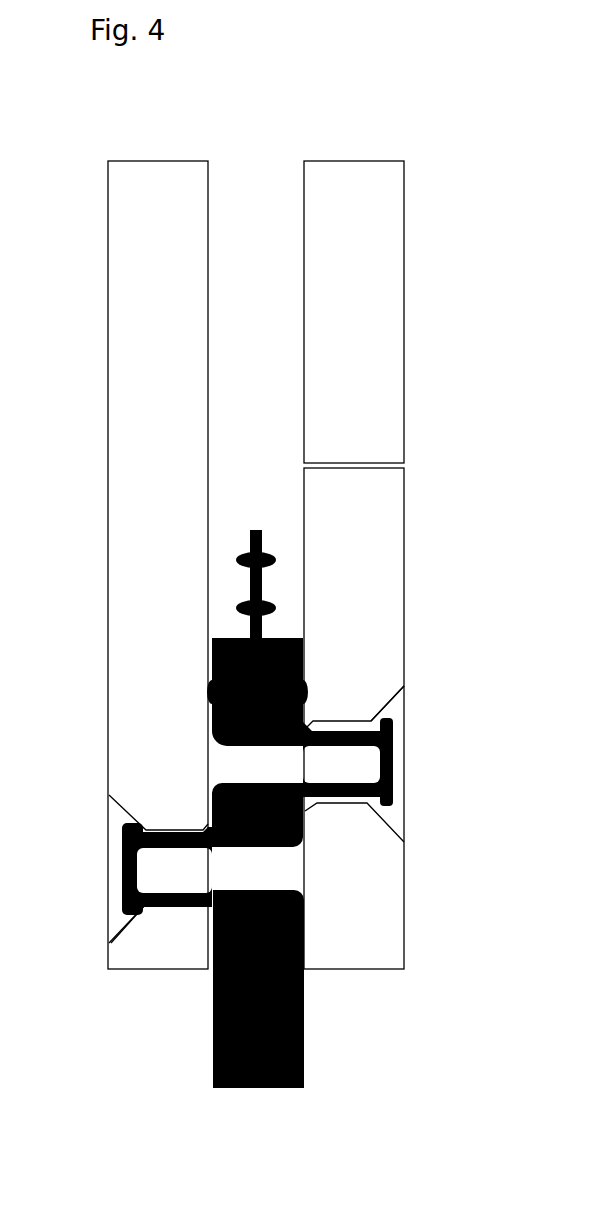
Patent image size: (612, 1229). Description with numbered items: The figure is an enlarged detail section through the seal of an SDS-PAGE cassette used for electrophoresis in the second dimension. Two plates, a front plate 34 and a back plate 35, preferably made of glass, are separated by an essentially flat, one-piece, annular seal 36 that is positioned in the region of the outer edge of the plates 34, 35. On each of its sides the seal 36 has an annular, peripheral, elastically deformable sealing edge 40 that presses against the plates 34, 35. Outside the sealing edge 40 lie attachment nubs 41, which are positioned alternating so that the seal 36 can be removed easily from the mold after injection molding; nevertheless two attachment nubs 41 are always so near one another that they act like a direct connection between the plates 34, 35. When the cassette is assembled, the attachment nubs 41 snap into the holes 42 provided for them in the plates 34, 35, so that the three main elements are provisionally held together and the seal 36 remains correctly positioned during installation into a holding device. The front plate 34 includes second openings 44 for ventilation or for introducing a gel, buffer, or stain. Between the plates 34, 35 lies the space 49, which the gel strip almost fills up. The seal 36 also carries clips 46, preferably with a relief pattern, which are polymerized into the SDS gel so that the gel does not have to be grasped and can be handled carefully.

The front plate 34 is at (374, 573).
The back plate 35 is at (169, 573).
The seal 36 is at (214, 1028).
The sealing edge 40 is at (207, 686).
The attachment nubs 41 is at (343, 792).
The holes 42 is at (392, 705).
The second openings 44 is at (372, 377).
The clips 46 is at (248, 592).
The space 49 is at (267, 377).